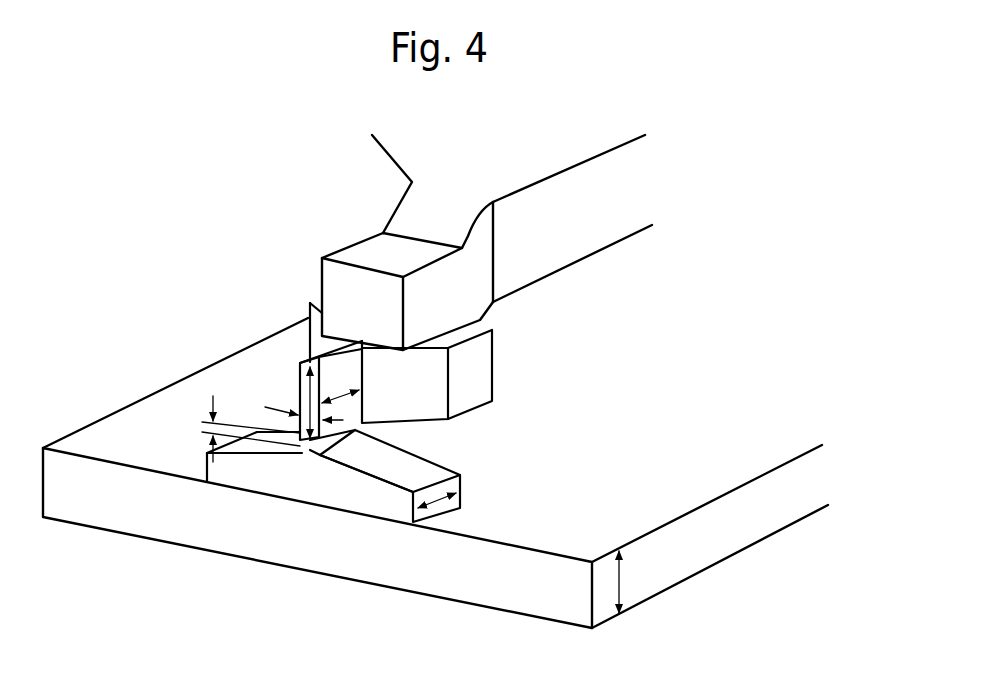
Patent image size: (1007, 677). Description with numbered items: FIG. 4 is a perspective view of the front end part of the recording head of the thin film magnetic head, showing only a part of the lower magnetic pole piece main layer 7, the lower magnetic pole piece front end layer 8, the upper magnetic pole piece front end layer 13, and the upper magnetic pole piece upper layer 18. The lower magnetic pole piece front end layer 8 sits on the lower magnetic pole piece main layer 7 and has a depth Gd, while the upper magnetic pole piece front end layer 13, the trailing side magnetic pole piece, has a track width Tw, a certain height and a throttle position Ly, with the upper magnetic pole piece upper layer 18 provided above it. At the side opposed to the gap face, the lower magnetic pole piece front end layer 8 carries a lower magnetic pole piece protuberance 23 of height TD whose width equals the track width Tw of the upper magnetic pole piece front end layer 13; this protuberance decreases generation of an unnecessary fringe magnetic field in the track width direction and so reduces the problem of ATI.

The lower magnetic pole piece main layer 7 is at (722, 550).
The lower magnetic pole piece front end layer 8 is at (382, 508).
The upper magnetic pole piece front end layer 13 is at (475, 383).
The upper magnetic pole piece upper layer 18 is at (593, 193).
The lower magnetic pole piece protuberance 23 is at (305, 450).